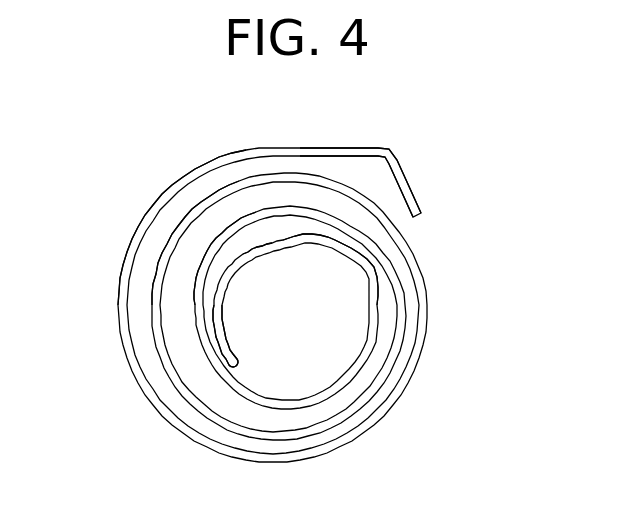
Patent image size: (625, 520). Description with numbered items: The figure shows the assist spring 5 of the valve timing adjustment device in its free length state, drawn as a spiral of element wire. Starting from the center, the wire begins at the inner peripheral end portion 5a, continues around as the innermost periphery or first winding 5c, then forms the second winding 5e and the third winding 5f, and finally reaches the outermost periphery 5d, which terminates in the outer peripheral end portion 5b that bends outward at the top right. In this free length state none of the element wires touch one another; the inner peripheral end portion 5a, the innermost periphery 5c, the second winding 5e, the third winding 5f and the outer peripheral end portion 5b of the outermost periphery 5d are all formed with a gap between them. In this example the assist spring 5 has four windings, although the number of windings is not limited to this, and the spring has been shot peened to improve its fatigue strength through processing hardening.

The assist spring 5 is at (420, 317).
The inner peripheral end portion 5a is at (220, 330).
The outer peripheral end portion 5b is at (400, 160).
The innermost periphery (first winding) 5c is at (268, 253).
The outermost periphery 5d is at (180, 183).
The second winding 5e is at (203, 273).
The third winding 5f is at (177, 230).